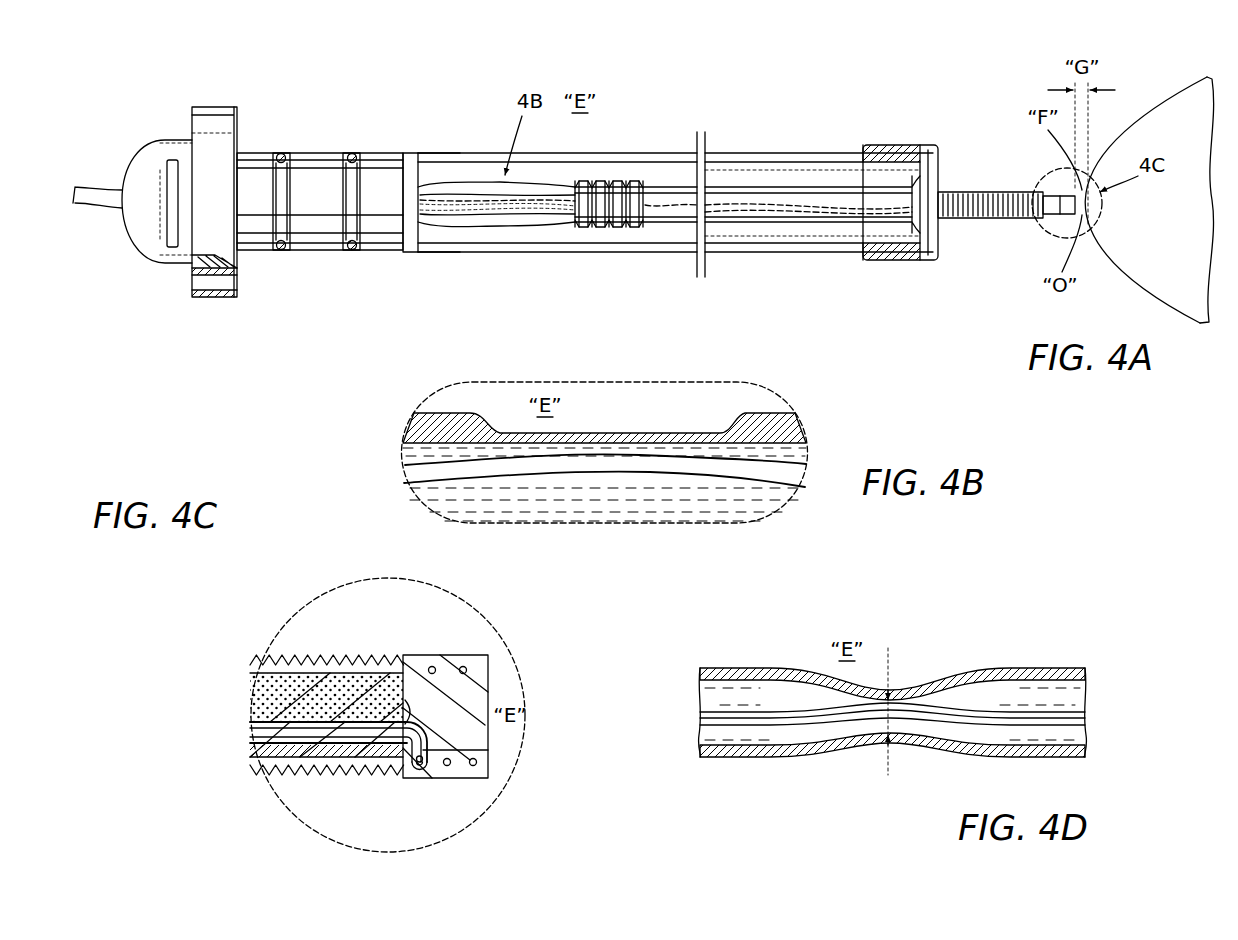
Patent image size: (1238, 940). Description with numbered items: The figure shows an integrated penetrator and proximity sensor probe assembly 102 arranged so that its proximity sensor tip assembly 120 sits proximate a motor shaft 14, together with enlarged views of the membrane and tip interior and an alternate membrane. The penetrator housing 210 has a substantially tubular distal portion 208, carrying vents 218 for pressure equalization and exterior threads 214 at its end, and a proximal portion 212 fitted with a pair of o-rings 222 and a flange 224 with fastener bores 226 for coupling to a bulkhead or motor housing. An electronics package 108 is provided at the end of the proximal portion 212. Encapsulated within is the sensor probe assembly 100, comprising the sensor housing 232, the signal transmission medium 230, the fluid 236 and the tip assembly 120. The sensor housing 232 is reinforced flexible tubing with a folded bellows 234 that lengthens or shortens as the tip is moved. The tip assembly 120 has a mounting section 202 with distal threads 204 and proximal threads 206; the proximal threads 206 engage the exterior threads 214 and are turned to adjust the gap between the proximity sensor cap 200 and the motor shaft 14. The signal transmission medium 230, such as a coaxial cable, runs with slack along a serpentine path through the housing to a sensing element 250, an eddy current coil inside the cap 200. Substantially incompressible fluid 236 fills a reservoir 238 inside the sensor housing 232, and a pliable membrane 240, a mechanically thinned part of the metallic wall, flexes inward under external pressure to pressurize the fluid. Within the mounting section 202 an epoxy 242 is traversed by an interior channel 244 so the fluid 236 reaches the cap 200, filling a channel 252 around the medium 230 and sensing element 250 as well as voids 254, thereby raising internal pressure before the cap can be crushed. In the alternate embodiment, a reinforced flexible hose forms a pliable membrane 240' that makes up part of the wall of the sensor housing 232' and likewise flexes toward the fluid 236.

In FIG. 4A, the motor shaft 14 is at (1158, 257).
In FIG. 4A, the sensor probe assembly 100 is at (909, 126).
In FIG. 4A, the integrated penetrator and proximity sensor probe assembly 102 is at (809, 106).
In FIG. 4A, the electronics package 108 is at (167, 170).
In FIG. 4A, the proximity sensor tip assembly 120 is at (976, 228).
In FIG. 4A, the proximity sensor cap 200 is at (1063, 215).
In FIG. 4C, the proximity sensor cap 200 is at (490, 688).
In FIG. 4A, the mounting section 202 is at (998, 190).
In FIG. 4C, the mounting section 202 is at (300, 780).
In FIG. 4A, the distal threads 204 is at (966, 190).
In FIG. 4A, the proximal threads 206 is at (878, 148).
In FIG. 4A, the distal portion 208 is at (755, 162).
In FIG. 4A, the penetrator housing 210 is at (646, 125).
In FIG. 4A, the proximal portion 212 is at (392, 252).
In FIG. 4A, the exterior threads 214 is at (882, 258).
In FIG. 4A, the vents 218 is at (415, 152).
In FIG. 4A, the o-rings 222 is at (352, 153).
In FIG. 4A, the flange 224 is at (222, 107).
In FIG. 4A, the fastener bores 226 is at (213, 300).
In FIG. 4A, the signal transmission medium 230 is at (758, 223).
In FIG. 4B, the signal transmission medium 230 is at (435, 474).
In FIG. 4C, the signal transmission medium 230 is at (262, 742).
In FIG. 4D, the signal transmission medium 230 is at (742, 727).
In FIG. 4A, the sensor housing 232 is at (747, 161).
In FIG. 4B, the sensor housing 232 is at (633, 403).
In FIG. 4D, the sensor housing 232' is at (924, 683).
In FIG. 4A, the bellows 234 is at (620, 227).
In FIG. 4A, the fluid 236 is at (520, 217).
In FIG. 4B, the fluid 236 is at (592, 508).
In FIG. 4C, the fluid 236 is at (265, 706).
In FIG. 4D, the fluid 236 is at (1035, 712).
In FIG. 4A, the fluid reservoir 238 is at (478, 215).
In FIG. 4B, the fluid reservoir 238 is at (672, 500).
In FIG. 4A, the pliable membrane 240 is at (496, 158).
In FIG. 4B, the pliable membrane 240 is at (604, 390).
In FIG. 4D, the pliable membrane 240' is at (932, 690).
In FIG. 4C, the epoxy 242 is at (310, 672).
In FIG. 4C, the interior channel 244 is at (345, 728).
In FIG. 4C, the sensing element 250 is at (455, 778).
In FIG. 4C, the channel 252 is at (490, 750).
In FIG. 4C, the voids 254 is at (420, 712).